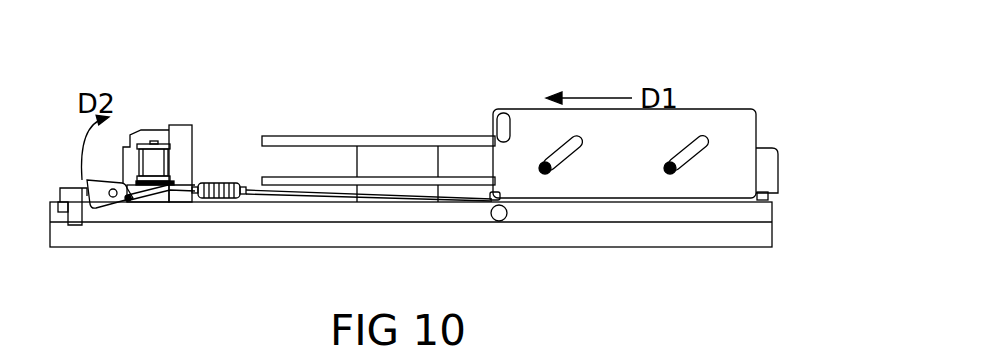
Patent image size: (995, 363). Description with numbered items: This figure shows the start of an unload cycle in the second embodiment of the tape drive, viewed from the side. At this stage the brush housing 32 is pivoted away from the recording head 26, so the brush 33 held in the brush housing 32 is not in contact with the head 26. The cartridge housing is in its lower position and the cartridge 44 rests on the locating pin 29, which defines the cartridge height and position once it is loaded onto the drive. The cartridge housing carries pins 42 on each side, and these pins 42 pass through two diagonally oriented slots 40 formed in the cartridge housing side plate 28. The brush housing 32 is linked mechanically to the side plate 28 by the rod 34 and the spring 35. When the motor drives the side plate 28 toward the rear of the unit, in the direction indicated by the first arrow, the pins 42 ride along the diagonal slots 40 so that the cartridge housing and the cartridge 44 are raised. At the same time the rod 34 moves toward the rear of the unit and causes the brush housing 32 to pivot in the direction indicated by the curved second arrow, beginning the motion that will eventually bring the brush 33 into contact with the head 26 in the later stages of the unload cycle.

The recording head 26 is at (155, 135).
The cartridge housing side plate 28 is at (628, 163).
The locating pin 29 is at (770, 196).
The brush housing 32 is at (98, 203).
The brush 33 is at (72, 192).
The rod 34 is at (273, 192).
The spring 35 is at (213, 196).
The diagonally oriented slot 40 is at (572, 150).
The pin 42 is at (543, 172).
The cartridge 44 is at (767, 157).